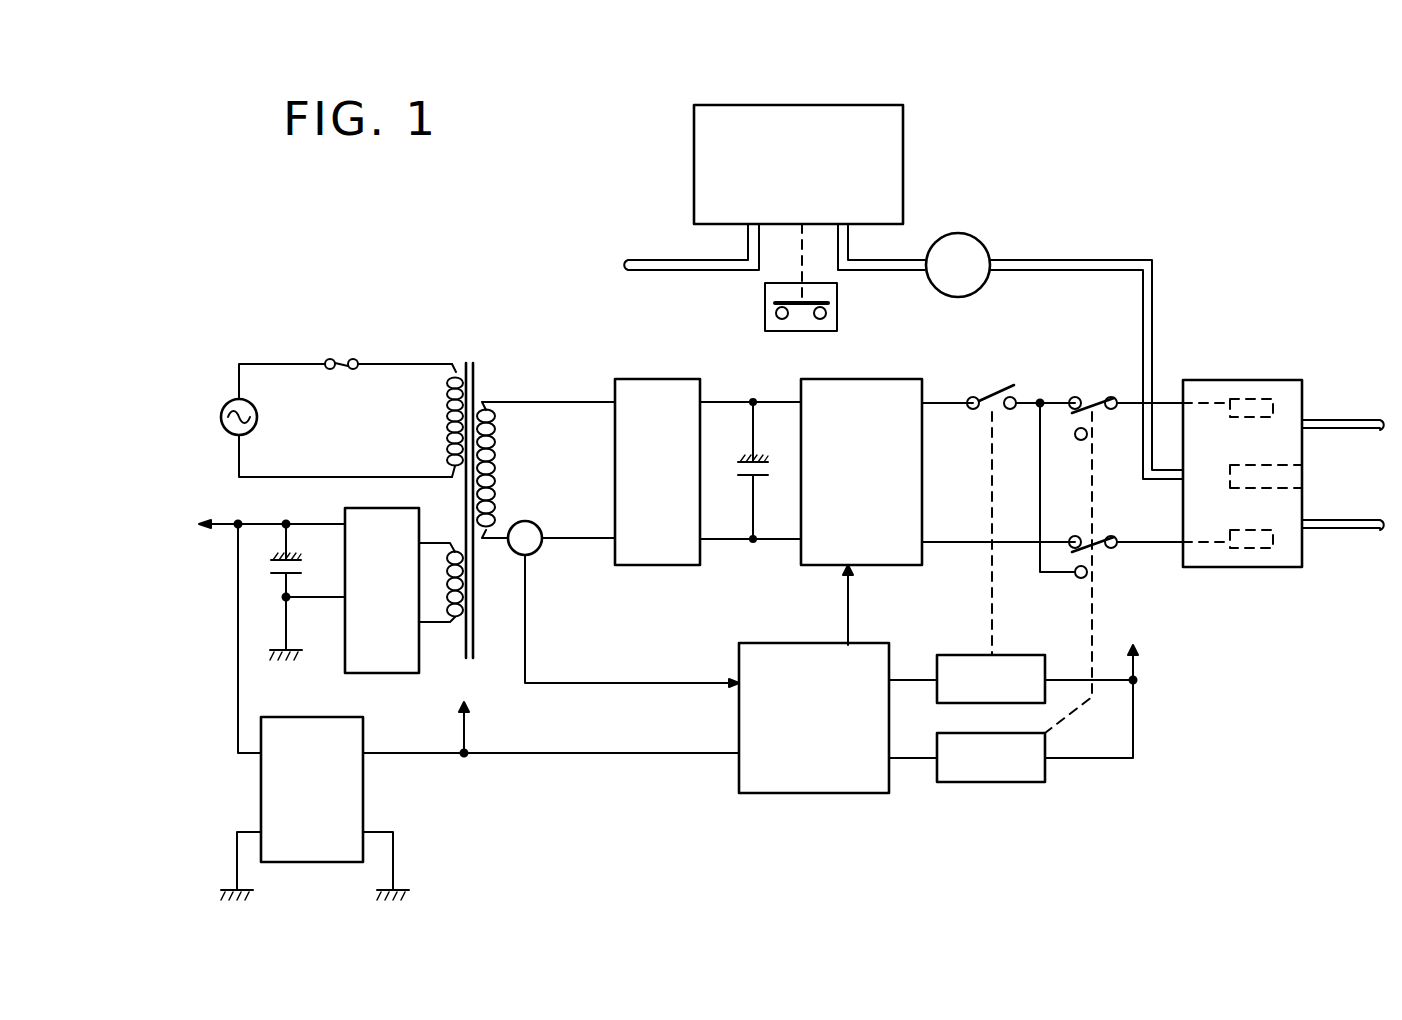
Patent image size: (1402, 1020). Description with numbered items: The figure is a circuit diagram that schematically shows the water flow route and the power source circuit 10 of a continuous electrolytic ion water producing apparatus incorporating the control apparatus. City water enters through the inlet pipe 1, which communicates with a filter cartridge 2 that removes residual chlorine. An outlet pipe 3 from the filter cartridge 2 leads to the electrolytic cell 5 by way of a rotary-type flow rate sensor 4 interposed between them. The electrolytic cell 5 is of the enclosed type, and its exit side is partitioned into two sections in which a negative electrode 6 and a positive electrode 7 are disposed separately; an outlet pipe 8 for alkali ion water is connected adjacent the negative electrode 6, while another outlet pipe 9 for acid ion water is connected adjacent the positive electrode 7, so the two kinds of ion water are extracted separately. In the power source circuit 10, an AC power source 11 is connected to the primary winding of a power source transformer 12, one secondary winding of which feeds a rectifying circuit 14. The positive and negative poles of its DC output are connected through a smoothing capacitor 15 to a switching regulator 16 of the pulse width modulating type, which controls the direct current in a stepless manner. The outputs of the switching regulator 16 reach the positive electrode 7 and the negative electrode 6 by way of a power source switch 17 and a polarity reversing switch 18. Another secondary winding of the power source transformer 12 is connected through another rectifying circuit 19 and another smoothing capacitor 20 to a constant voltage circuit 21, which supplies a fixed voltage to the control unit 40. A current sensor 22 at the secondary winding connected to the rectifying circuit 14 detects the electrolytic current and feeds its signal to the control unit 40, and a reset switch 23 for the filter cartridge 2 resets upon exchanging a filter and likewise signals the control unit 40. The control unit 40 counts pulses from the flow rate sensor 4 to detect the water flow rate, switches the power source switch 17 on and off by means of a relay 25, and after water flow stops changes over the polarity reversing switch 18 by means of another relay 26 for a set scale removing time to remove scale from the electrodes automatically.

The inlet pipe 1 is at (658, 258).
The filter cartridge 2 is at (905, 118).
The outlet pipe 3 is at (860, 276).
The flow rate sensor 4 is at (973, 235).
The electrolytic cell 5 is at (1203, 380).
The negative electrode 6 is at (1262, 548).
The positive electrode 7 is at (1262, 397).
The outlet pipe for alkali ion water 8 is at (1342, 518).
The outlet pipe for acid ion water 9 is at (1350, 418).
The power source circuit 10 is at (775, 380).
The AC power source 11 is at (223, 409).
The power source transformer 12 is at (472, 360).
The rectifying circuit 14 is at (668, 379).
The smoothing capacitor 15 is at (763, 460).
The switching regulator 16 is at (890, 379).
The power source switch 17 is at (996, 392).
The polarity reversing switch 18 is at (1093, 401).
The rectifying circuit 19 is at (400, 674).
The smoothing capacitor 20 is at (267, 565).
The constant voltage circuit 21 is at (363, 795).
The current sensor 22 is at (538, 551).
The reset switch 23 is at (765, 318).
The relay 25 is at (1016, 655).
The relay 26 is at (1010, 782).
The control unit 40 is at (769, 643).